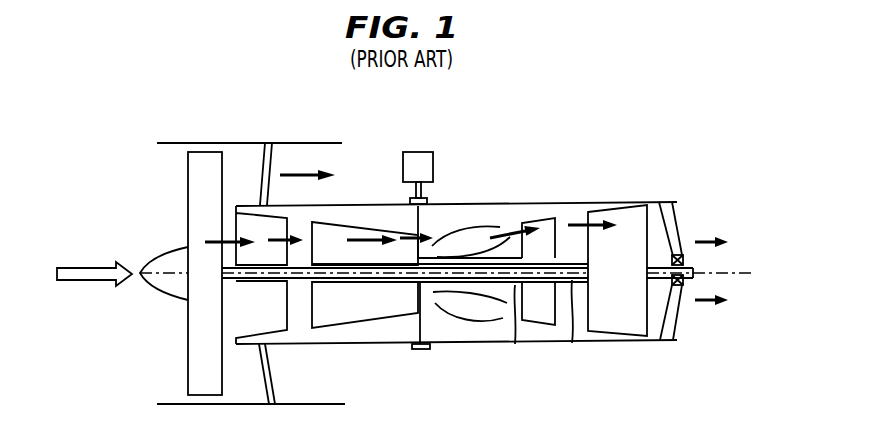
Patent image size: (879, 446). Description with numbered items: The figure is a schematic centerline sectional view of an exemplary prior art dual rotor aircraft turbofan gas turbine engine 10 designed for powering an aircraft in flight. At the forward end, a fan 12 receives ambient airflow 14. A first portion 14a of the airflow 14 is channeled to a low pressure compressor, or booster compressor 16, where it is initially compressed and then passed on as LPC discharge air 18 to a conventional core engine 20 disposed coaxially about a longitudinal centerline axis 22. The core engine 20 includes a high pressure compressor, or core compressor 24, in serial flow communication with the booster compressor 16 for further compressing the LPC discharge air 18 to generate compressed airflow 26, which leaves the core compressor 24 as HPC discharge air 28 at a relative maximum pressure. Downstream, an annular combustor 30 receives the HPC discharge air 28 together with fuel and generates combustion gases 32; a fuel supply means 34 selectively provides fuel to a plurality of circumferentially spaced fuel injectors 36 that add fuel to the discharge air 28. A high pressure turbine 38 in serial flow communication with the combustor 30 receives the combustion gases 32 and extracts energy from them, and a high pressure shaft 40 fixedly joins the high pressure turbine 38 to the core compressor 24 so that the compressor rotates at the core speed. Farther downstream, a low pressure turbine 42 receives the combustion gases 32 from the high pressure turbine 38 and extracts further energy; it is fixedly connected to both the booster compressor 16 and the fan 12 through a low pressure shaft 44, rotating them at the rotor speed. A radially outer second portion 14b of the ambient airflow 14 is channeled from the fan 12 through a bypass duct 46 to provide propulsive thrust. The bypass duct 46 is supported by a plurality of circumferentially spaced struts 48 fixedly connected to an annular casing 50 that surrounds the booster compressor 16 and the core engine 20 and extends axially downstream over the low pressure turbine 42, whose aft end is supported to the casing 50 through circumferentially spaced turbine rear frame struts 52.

The turbofan gas turbine engine 10 is at (450, 202).
The fan 12 is at (188, 196).
The ambient airflow 14 is at (88, 268).
The first portion of the airflow 14a is at (214, 240).
The second portion of the ambient airflow 14b is at (308, 172).
The low pressure compressor 16 is at (271, 318).
The LPC discharge air 18 is at (286, 246).
The core engine 20 is at (557, 377).
The longitudinal centerline axis 22 is at (740, 270).
The high pressure compressor 24 is at (342, 311).
The compressed airflow 26 is at (360, 243).
The HPC discharge air 28 is at (399, 242).
The annular combustor 30 is at (462, 230).
The combustion gases 32 is at (513, 230).
The fuel supply means 34 is at (428, 178).
The fuel injectors 36 is at (425, 229).
The high pressure turbine 38 is at (546, 219).
The high pressure shaft 40 is at (515, 344).
The low pressure turbine 42 is at (610, 206).
The low pressure shaft 44 is at (572, 343).
The bypass duct 46 is at (247, 148).
The struts 48 is at (276, 153).
The annular casing 50 is at (336, 206).
The turbine rear frame struts 52 is at (676, 212).